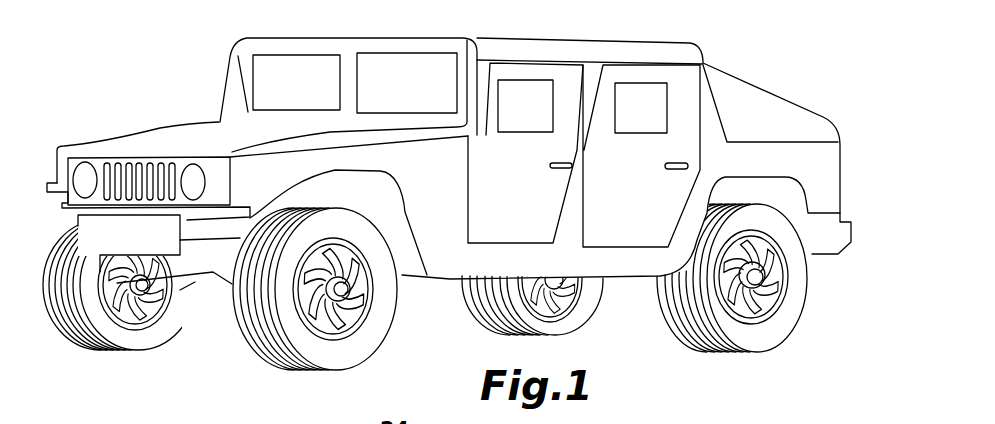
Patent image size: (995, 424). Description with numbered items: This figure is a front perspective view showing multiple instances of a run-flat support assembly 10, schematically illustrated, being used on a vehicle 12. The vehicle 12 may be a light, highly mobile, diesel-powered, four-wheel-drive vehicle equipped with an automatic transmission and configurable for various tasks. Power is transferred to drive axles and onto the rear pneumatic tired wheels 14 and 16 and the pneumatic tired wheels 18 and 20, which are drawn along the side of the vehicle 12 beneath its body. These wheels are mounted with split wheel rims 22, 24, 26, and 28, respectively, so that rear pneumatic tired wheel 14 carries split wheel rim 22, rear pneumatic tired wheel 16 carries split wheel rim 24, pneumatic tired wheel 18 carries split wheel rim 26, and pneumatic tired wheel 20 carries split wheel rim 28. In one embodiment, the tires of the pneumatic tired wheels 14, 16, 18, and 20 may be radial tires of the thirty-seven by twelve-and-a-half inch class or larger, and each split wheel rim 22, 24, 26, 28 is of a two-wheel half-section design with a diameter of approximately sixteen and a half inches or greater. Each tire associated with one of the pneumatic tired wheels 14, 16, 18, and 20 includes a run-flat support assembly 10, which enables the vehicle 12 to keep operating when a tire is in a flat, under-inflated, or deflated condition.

The run-flat support assembly 10 is at (449, 215).
The vehicle 12 is at (730, 57).
The rear pneumatic tired wheel 14 is at (555, 288).
The rear pneumatic tired wheel 16 is at (756, 285).
The pneumatic tired wheel 18 is at (137, 291).
The pneumatic tired wheel 20 is at (337, 298).
The split wheel rim 22 is at (568, 289).
The split wheel rim 24 is at (773, 268).
The split wheel rim 26 is at (153, 299).
The split wheel rim 28 is at (360, 290).